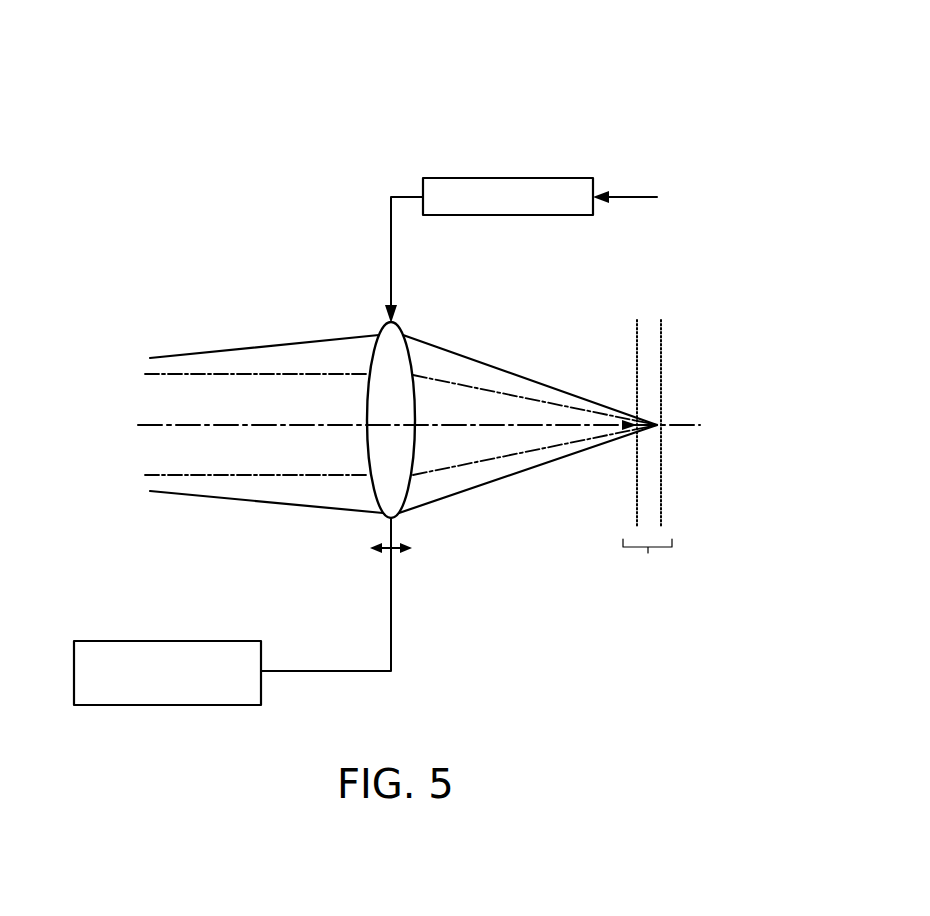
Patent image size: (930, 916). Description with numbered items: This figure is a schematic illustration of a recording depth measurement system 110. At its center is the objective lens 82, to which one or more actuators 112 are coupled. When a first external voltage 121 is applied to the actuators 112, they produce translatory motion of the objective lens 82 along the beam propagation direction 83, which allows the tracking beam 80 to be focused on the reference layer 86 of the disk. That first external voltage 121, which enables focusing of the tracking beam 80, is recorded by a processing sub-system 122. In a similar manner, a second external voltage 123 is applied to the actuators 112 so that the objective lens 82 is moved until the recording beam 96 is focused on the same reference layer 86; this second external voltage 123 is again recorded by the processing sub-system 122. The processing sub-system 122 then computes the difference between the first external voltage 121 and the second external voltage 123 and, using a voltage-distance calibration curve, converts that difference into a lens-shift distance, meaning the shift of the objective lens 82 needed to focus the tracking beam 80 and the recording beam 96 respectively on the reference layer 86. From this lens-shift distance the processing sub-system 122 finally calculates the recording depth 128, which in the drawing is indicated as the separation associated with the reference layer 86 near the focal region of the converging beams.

The recording depth measurement system 110 is at (652, 62).
The actuators 112 is at (507, 177).
The first external voltage 121 is at (684, 177).
The second external voltage 123 is at (639, 194).
The objective lens 82 is at (398, 325).
The tracking beam 80 is at (246, 346).
The recording beam 96 is at (228, 477).
The beam propagation direction 83 is at (377, 555).
The reference layer 86 is at (663, 490).
The recording depth 128 is at (649, 563).
The processing sub-system 122 is at (139, 640).